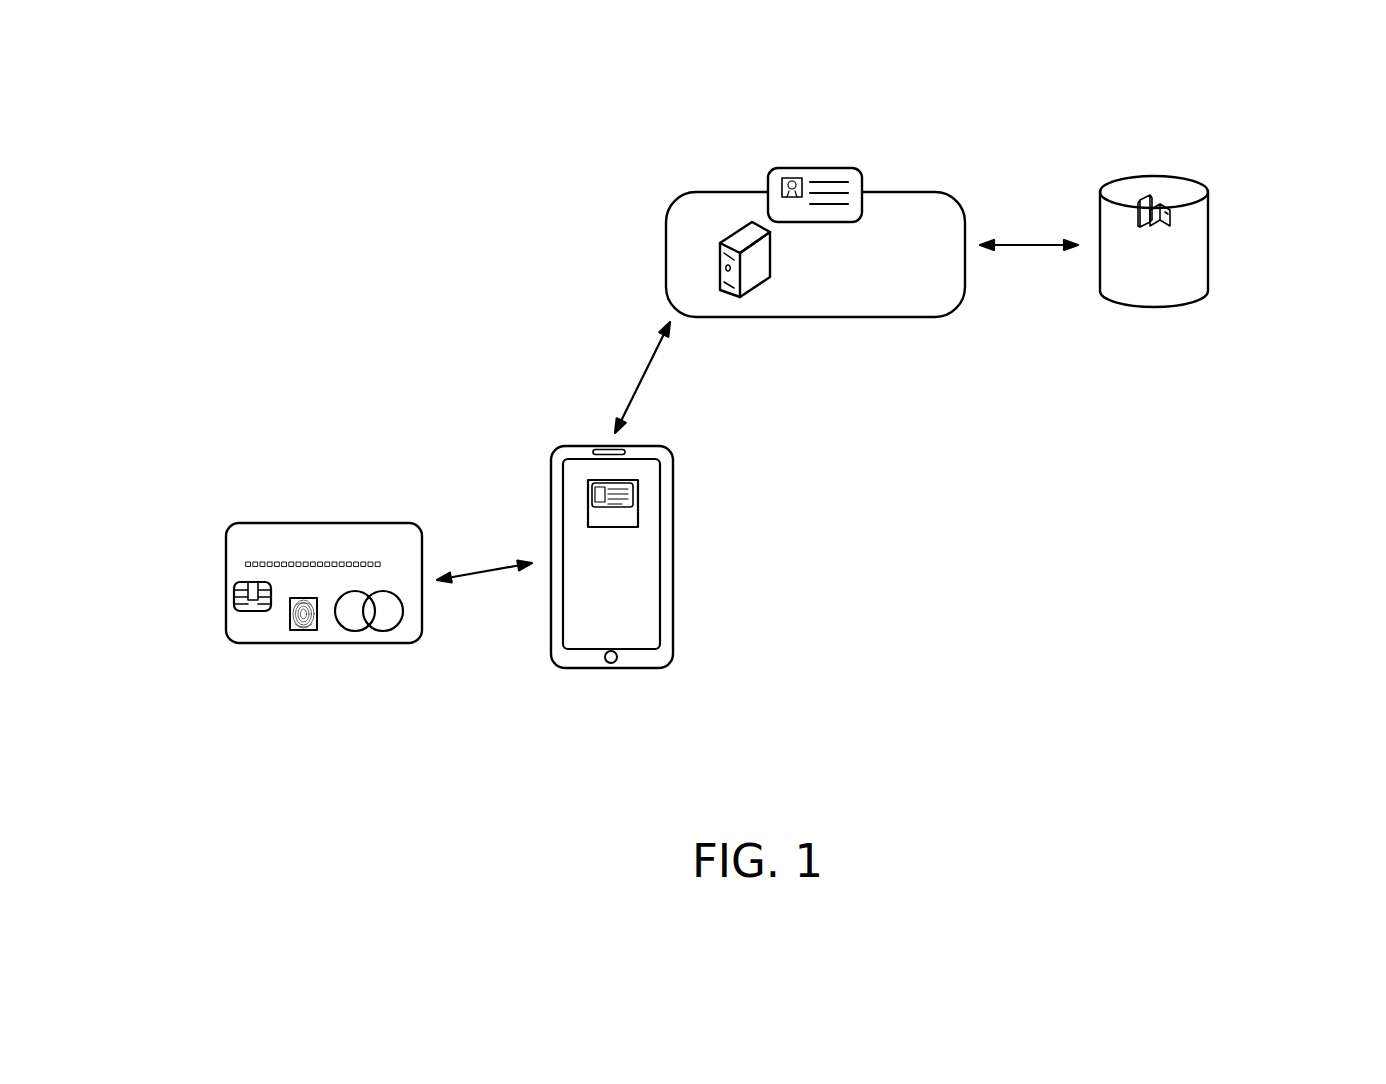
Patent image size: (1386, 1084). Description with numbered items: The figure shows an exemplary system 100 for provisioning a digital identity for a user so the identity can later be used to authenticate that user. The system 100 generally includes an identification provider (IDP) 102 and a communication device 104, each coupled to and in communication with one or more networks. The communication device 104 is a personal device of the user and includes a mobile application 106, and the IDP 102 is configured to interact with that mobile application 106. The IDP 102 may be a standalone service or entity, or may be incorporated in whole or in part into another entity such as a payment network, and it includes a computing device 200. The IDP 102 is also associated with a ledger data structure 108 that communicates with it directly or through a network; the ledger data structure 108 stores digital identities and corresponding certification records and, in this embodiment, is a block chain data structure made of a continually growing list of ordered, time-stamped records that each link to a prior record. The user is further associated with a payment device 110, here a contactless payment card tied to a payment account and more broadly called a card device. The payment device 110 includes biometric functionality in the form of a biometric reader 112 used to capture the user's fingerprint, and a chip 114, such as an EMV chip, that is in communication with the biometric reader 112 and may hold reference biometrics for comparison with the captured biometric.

The system 100 is at (363, 274).
The identification provider (IDP) 102 is at (650, 198).
The communication device 104 is at (540, 435).
The mobile application 106 is at (638, 505).
The ledger data structure 108 is at (1208, 250).
The payment device 110 is at (332, 510).
The biometric reader 112 is at (302, 633).
The chip 114 is at (233, 596).
The computing device 200 is at (771, 255).